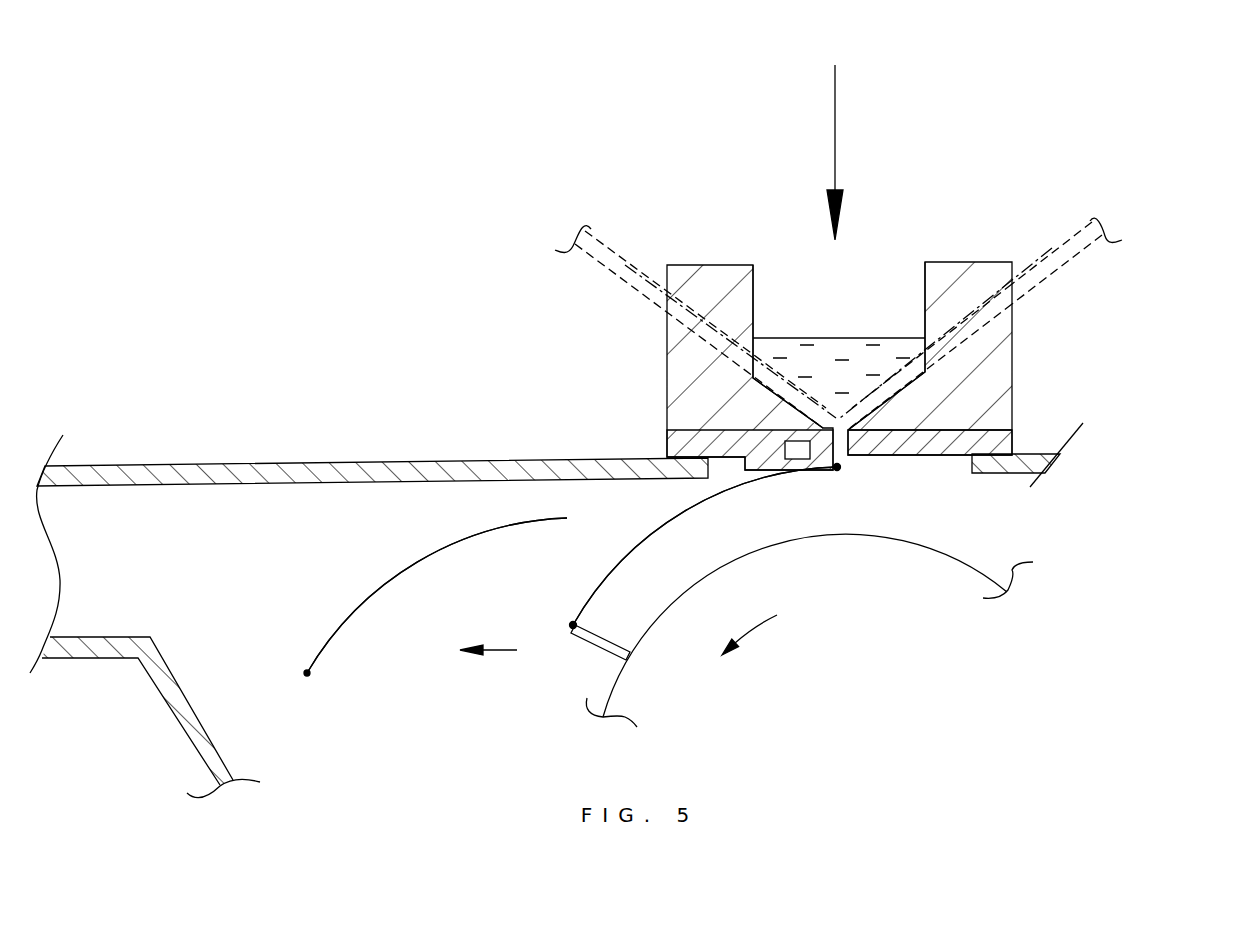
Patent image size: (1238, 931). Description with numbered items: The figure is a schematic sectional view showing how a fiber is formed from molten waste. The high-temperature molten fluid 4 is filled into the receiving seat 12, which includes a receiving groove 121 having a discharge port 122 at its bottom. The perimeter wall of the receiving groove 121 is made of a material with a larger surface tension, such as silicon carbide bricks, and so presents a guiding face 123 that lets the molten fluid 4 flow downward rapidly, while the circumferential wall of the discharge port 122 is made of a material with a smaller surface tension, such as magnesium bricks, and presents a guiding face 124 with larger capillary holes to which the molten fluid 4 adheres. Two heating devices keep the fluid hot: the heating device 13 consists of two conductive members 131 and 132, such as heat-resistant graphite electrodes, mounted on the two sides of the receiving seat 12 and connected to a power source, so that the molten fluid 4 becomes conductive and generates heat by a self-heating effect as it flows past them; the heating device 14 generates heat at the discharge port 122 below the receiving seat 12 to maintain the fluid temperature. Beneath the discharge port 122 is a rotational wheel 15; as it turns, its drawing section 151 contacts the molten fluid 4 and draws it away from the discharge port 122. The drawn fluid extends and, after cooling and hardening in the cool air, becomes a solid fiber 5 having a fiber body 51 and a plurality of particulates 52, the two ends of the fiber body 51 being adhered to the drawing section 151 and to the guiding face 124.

The receiving seat 12 is at (1040, 330).
The receiving groove 121 is at (882, 293).
The discharge port 122 is at (845, 448).
The guiding face 123 is at (900, 397).
The guiding face 124 is at (833, 443).
The heating device 13 is at (1088, 276).
The conductive member 131 is at (1052, 248).
The conductive member 132 is at (623, 262).
The heating device 14 is at (797, 447).
The rotational wheel 15 is at (935, 548).
The drawing section 151 is at (597, 648).
The molten fluid 4 is at (834, 336).
The solid fiber 5 is at (685, 527).
The fiber body 51 is at (707, 503).
The particulates 52 is at (580, 617).